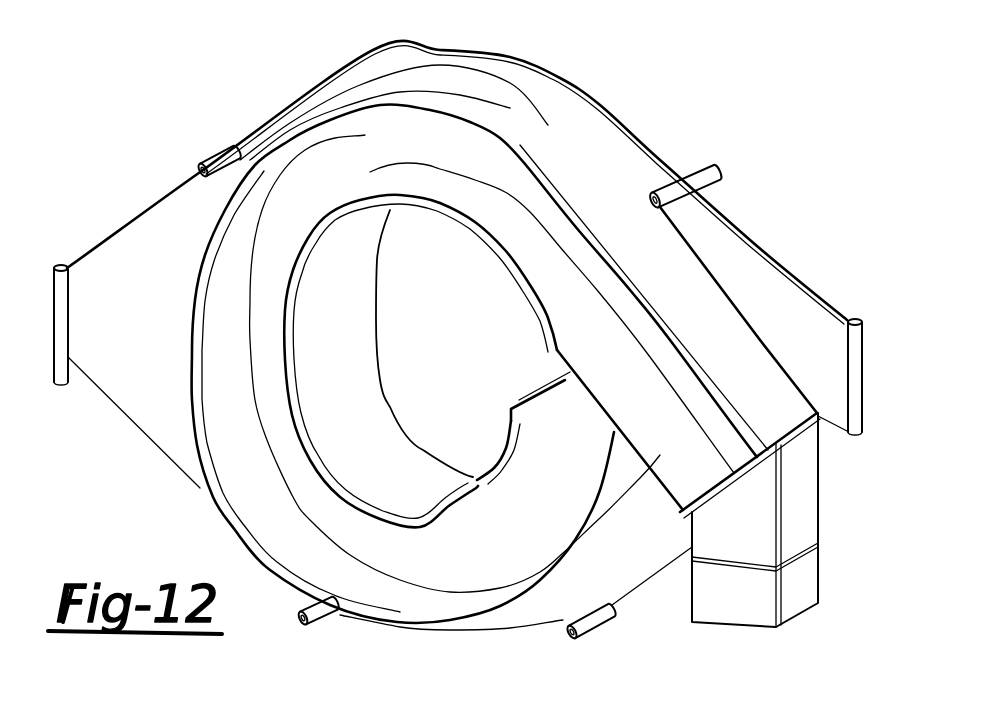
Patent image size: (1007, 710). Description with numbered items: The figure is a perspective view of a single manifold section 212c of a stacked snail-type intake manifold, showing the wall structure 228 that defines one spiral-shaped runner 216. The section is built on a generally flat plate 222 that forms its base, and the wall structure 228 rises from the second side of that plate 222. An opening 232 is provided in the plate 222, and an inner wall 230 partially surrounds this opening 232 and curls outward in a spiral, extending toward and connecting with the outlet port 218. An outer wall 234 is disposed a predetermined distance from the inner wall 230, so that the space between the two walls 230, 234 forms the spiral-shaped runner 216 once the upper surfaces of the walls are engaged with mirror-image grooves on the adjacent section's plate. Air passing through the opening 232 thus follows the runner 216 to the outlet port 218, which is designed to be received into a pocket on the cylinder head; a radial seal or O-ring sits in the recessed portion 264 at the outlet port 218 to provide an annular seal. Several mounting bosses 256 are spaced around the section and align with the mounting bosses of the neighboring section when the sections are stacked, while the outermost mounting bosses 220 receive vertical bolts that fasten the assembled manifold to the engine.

The manifold section 212c is at (752, 222).
The runner 216 is at (350, 137).
The outlet port 218 is at (797, 587).
The mounting boss 220 is at (63, 317).
The flat plate 222 is at (752, 297).
The wall structure 228 is at (598, 179).
The inner wall 230 is at (370, 172).
The opening 232 is at (378, 328).
The outer wall 234 is at (535, 137).
The mounting boss 256 is at (230, 150).
The recessed portion 264 is at (793, 547).